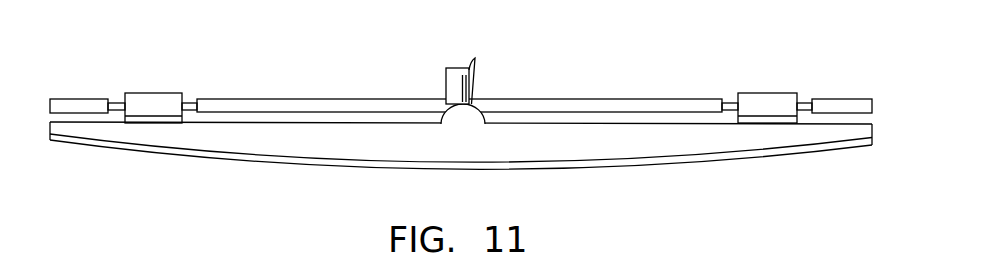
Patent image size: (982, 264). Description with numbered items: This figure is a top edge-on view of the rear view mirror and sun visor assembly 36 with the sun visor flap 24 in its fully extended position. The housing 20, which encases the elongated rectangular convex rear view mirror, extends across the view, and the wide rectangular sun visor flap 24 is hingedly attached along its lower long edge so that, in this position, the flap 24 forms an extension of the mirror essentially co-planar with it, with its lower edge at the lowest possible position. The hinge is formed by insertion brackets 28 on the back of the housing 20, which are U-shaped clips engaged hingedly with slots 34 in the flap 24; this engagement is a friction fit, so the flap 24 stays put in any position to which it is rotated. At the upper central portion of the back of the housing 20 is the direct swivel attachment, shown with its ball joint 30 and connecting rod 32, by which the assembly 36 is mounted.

The housing 20 is at (290, 147).
The sun visor flap 24 is at (337, 107).
The insertion brackets 28 is at (142, 105).
The ball joint 30 is at (464, 116).
The connecting rod 32 is at (452, 87).
The slots 34 is at (120, 102).
The rear view mirror and sun visor assembly 36 is at (720, 184).